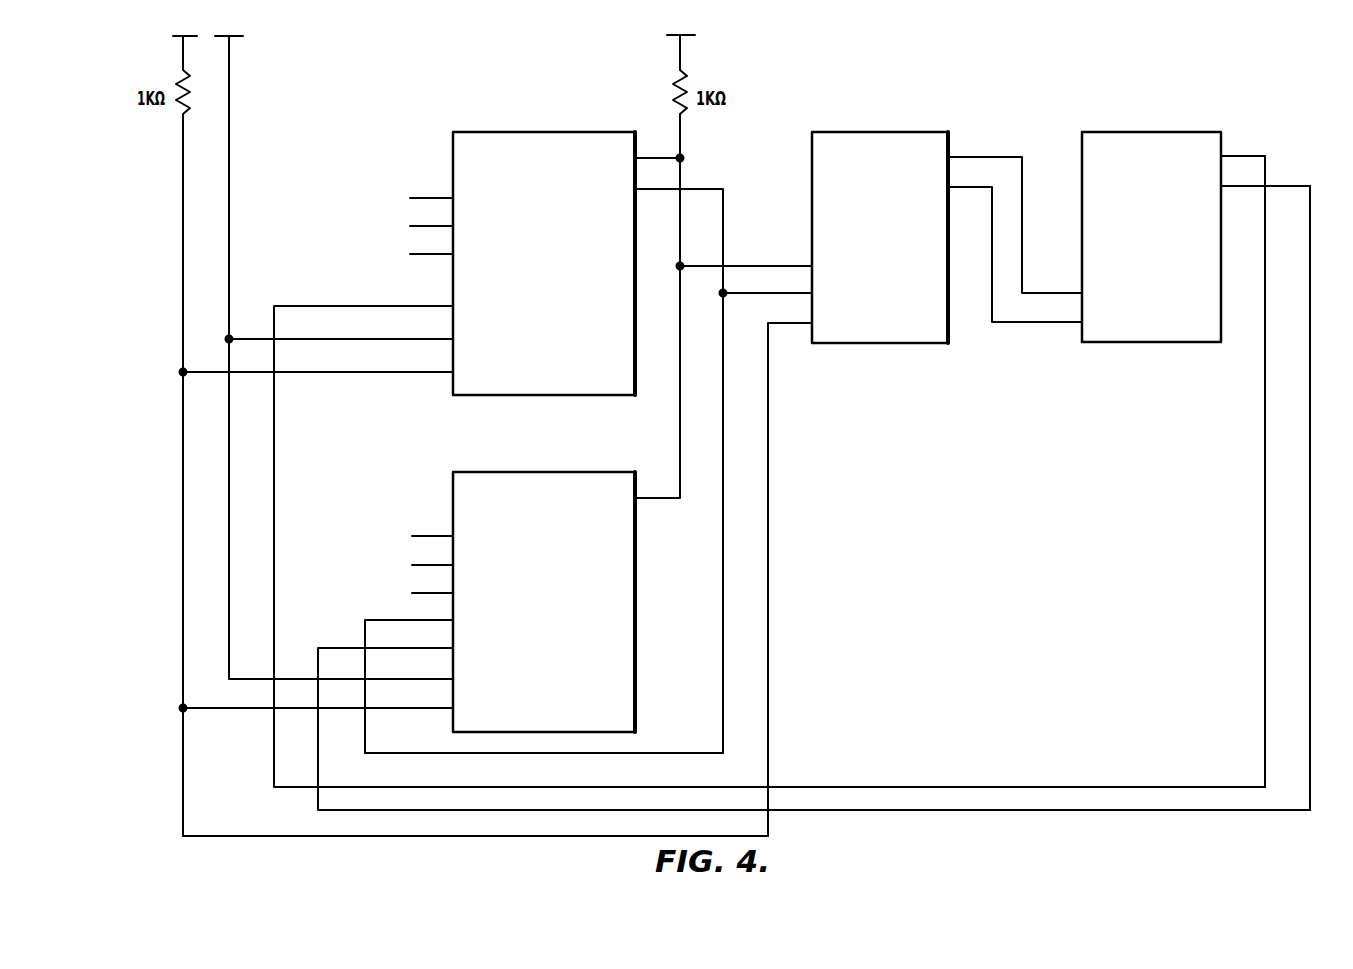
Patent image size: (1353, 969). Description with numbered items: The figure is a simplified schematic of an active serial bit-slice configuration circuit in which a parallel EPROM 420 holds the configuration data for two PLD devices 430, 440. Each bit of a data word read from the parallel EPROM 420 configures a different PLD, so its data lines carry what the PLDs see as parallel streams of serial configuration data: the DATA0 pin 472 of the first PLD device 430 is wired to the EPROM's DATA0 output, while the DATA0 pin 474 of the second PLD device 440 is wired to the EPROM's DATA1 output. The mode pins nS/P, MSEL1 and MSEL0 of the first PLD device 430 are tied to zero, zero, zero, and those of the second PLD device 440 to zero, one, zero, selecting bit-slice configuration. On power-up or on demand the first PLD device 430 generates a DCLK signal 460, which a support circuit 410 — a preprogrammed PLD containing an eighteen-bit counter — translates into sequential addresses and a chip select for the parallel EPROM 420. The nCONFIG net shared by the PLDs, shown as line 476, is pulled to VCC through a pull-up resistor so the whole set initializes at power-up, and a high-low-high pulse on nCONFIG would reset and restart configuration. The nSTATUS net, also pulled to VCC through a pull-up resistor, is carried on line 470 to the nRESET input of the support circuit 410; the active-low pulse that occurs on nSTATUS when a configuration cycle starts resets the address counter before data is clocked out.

The support circuit 410 is at (949, 133).
The parallel EPROM 420 is at (1223, 143).
The PLD device 430 is at (463, 160).
The PLD device 440 is at (620, 472).
The DCLK signal 460 is at (698, 189).
The nSTATUS line 470 is at (768, 653).
The DATA0 pin 472 is at (345, 306).
The DATA0 pin 474 is at (332, 648).
The nCONFIG line 476 is at (350, 339).